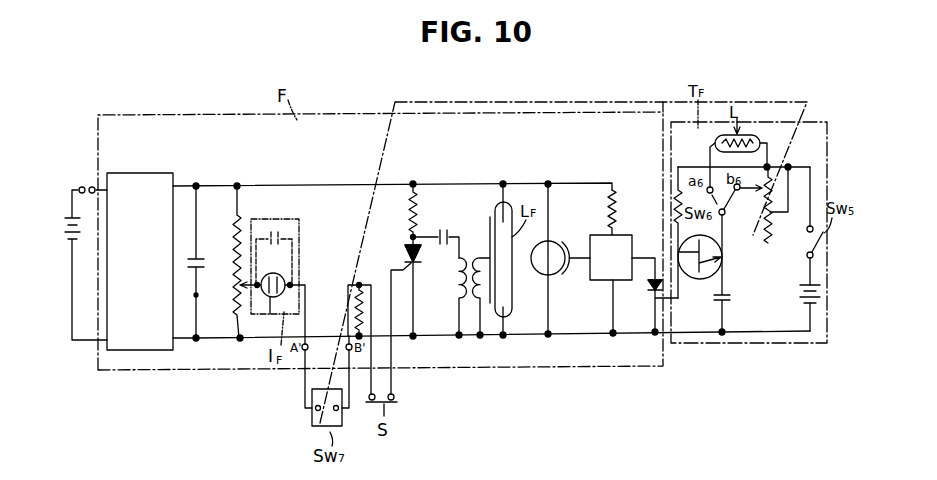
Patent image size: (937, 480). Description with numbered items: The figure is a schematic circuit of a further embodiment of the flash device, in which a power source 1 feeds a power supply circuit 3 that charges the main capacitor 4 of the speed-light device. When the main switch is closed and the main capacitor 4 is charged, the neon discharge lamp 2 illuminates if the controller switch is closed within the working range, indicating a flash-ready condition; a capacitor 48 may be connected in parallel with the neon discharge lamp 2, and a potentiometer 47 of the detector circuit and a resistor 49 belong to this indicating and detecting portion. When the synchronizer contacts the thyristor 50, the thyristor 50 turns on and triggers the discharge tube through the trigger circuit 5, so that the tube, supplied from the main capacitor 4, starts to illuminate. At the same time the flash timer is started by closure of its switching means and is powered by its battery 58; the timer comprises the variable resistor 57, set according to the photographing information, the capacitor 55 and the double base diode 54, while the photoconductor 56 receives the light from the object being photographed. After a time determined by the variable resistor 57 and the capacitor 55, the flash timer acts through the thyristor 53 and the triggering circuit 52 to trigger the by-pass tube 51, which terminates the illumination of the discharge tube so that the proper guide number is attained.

The power source with switch 1 is at (70, 224).
The neon discharge lamp 2 is at (274, 305).
The power supply circuit 3 is at (140, 172).
The main capacitor 4 is at (201, 254).
The trigger circuit 5 is at (471, 262).
The potentiometer 47 is at (235, 295).
The capacitor 48 is at (284, 224).
The resistor 49 is at (352, 307).
The thyristor 50 is at (409, 249).
The by-pass tube 51 is at (549, 243).
The triggering circuit 52 is at (600, 248).
The thyristor 53 is at (652, 288).
The double base diode 54 is at (706, 282).
The capacitor 55 is at (727, 294).
The photoconductor 56 is at (748, 140).
The variable resistor 57 is at (770, 244).
The battery 58 is at (815, 300).